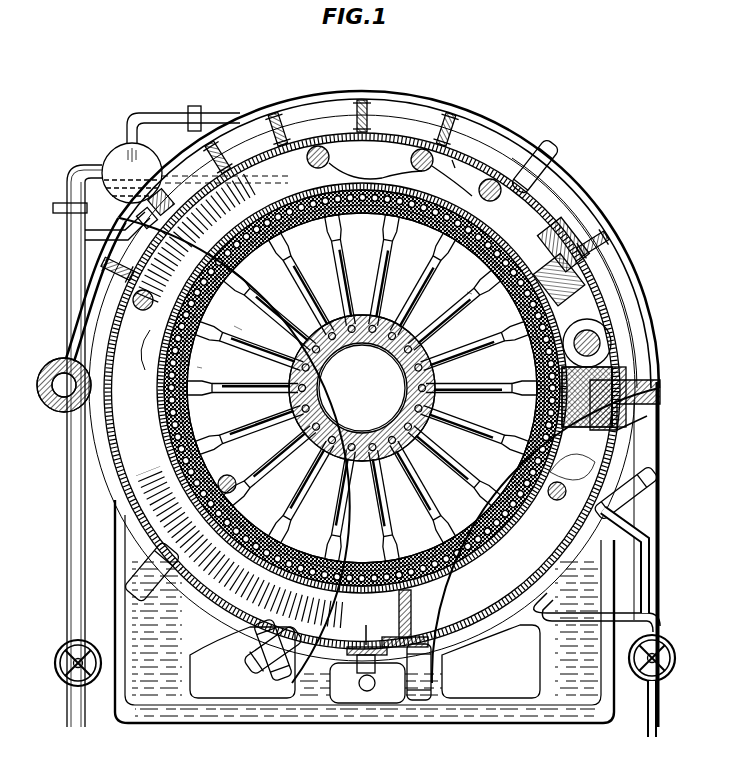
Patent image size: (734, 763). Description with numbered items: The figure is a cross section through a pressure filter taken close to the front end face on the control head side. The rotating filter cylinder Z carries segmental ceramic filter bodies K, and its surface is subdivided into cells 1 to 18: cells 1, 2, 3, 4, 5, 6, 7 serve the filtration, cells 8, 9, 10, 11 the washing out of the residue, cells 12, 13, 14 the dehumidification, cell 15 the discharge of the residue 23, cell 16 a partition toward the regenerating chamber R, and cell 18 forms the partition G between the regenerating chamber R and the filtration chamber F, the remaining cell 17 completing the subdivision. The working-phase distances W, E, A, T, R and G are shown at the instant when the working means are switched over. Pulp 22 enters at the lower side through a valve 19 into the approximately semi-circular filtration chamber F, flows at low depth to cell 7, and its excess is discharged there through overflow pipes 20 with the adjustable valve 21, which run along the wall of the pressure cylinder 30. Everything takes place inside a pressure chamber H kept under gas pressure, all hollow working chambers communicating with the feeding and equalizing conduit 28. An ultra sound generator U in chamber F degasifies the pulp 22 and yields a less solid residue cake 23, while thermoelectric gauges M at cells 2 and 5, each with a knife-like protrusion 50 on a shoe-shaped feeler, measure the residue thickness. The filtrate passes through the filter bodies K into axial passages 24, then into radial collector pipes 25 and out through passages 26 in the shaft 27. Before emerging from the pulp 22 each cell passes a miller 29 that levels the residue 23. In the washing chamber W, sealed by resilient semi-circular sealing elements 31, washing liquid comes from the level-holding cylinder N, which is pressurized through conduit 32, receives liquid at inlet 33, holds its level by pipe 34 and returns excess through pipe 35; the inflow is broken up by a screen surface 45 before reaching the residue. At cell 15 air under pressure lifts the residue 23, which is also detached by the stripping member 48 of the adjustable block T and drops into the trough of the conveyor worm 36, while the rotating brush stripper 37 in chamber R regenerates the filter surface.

The cell 1 is at (421, 488).
The cell 2 is at (385, 501).
The cell 3 is at (342, 501).
The cell 4 is at (303, 488).
The cell 5 is at (273, 462).
The cell 6 is at (253, 436).
The cell 7 is at (246, 400).
The cell 8 is at (253, 349).
The cell 9 is at (272, 313).
The cell 10 is at (297, 288).
The cell 11 is at (330, 273).
The cell 12 is at (376, 273).
The cell 13 is at (419, 288).
The cell 14 is at (451, 310).
The cell 15 is at (471, 343).
The cell 16 is at (478, 379).
The cell 17 is at (472, 428).
The cell 18 is at (451, 462).
The valve 19 is at (674, 650).
The overflow pipes 20 is at (66, 523).
The adjustable valve 21 is at (86, 682).
The pulp 22 is at (245, 543).
The residue 23 is at (359, 319).
The passages 24 is at (372, 388).
The collector pipes 25 is at (358, 368).
The passages 26 is at (362, 366).
The shaft 27 is at (362, 388).
The feeding and equalizing conduit 28 is at (350, 421).
The miller 29 is at (95, 410).
The pressure cylinder 30 is at (365, 393).
The sealing elements 31 is at (321, 233).
The conduit 32 is at (182, 111).
The washing liquid inlet 33 is at (118, 230).
The pipe 34 is at (196, 130).
The pipe 35 is at (72, 170).
The conveyor worm 36 is at (622, 373).
The stripper 37 is at (559, 396).
The screen surface 45 is at (222, 223).
The residue stripping member 48 is at (503, 349).
The protrusion 50 is at (362, 391).
The working-phase distance A is at (380, 388).
The working-phase distance E is at (458, 165).
The filtration chamber F is at (422, 618).
The partition G is at (596, 605).
The pressure chamber H is at (361, 310).
The filter body K is at (428, 425).
The thermoelectric gauge M is at (130, 582).
The cylinder N is at (118, 150).
The regenerating chamber R is at (545, 476).
The adjustable block T is at (634, 405).
The ultra sound generator U is at (662, 480).
The washing-out chamber W is at (250, 170).
The filter cylinder Z is at (217, 370).